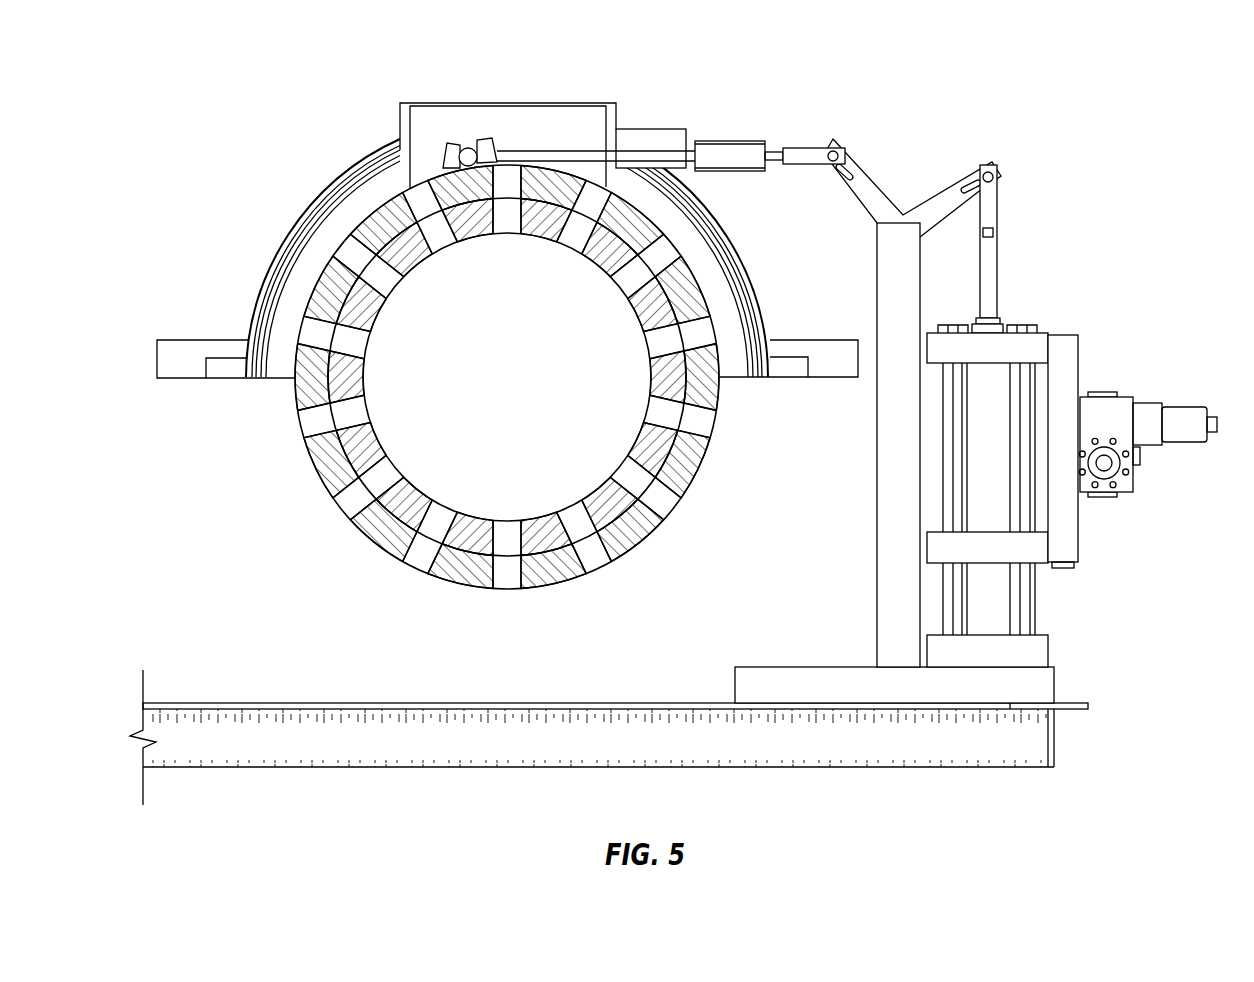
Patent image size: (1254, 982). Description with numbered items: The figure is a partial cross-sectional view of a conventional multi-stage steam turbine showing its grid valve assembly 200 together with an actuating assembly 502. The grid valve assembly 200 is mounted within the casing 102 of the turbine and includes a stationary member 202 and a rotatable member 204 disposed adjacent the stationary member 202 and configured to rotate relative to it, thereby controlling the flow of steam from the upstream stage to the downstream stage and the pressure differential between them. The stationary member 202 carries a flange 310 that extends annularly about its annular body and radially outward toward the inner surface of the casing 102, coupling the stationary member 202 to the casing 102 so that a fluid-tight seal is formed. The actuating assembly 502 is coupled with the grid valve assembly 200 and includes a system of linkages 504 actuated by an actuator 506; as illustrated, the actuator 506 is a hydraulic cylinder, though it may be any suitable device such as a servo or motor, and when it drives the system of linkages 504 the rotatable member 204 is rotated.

The casing 102 is at (276, 247).
The flange 310 is at (288, 312).
The grid valve assembly 200 is at (451, 380).
The stationary member 202 is at (621, 465).
The rotatable member 204 is at (379, 555).
The actuating assembly 502 is at (994, 130).
The system of linkages 504 is at (846, 134).
The actuator 506 is at (1025, 311).